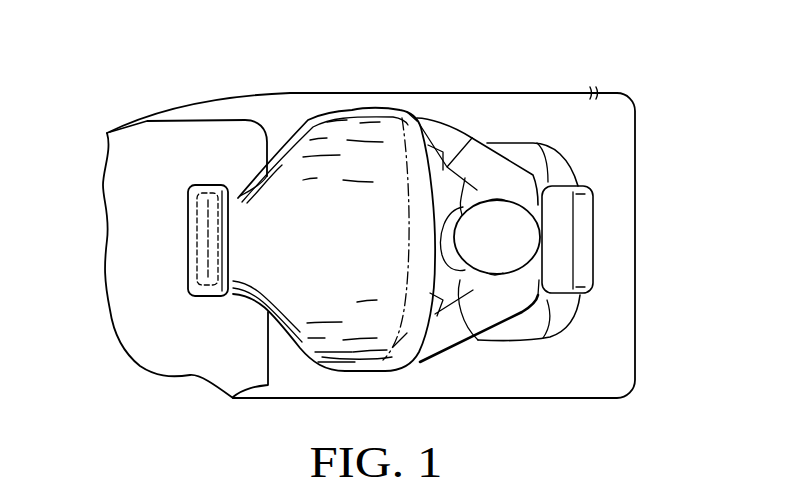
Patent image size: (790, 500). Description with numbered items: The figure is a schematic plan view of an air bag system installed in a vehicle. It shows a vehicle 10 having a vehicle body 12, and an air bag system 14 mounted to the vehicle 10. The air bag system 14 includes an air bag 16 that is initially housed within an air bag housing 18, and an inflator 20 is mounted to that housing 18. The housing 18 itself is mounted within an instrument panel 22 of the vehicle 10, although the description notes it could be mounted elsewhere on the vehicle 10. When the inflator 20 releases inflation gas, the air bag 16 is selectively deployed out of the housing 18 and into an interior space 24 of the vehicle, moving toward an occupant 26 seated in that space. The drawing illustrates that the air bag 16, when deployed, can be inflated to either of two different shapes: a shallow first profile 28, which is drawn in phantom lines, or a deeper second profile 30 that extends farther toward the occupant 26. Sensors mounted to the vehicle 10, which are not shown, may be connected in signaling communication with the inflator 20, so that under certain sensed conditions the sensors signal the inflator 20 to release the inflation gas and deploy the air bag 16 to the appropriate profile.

The vehicle 10 is at (690, 50).
The vehicle body 12 is at (636, 242).
The air bag system 14 is at (272, 132).
The air bag 16 is at (427, 362).
The air bag housing 18 is at (187, 210).
The inflator 20 is at (193, 257).
The instrument panel 22 is at (153, 138).
The interior space 24 is at (548, 363).
The occupant 26 is at (507, 173).
The shallow first profile 28 is at (422, 122).
The deeper second profile 30 is at (465, 138).